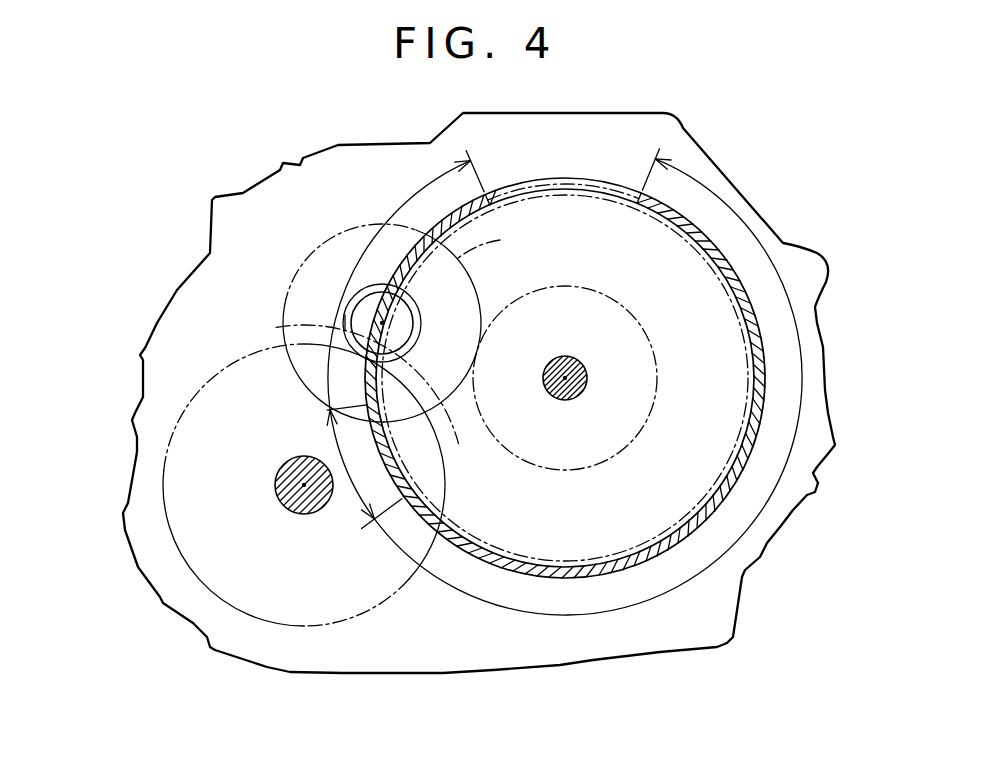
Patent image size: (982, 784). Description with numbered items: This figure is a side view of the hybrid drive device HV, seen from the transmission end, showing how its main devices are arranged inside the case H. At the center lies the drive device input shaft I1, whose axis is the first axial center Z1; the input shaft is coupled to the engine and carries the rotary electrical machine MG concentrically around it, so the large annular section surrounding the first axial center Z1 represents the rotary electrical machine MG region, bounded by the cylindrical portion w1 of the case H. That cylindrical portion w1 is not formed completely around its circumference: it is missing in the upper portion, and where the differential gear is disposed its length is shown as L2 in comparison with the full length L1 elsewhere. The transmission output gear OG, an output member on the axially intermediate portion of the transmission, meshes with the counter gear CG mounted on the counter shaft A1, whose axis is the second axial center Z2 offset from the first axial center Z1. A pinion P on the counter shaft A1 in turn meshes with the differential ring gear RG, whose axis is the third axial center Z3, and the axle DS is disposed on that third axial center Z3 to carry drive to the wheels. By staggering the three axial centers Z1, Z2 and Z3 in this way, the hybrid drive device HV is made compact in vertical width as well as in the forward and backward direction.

The case H is at (780, 527).
The hybrid drive device HV is at (178, 292).
The reference length of the cylindrical portion L1 is at (405, 205).
The shortened length at the differential gear disposing portion L2 is at (358, 497).
The rotary electrical machine MG is at (565, 417).
The cylindrical portion w1 is at (632, 570).
The transmission output gear OG is at (553, 472).
The first axial center Z1 is at (572, 372).
The drive device input shaft I1 is at (566, 357).
The counter gear CG is at (500, 240).
The second axial center Z2 is at (365, 336).
The counter shaft A1 is at (363, 282).
The pinion P is at (343, 323).
The third axial center Z3 is at (336, 450).
The axle DS is at (277, 500).
The differential ring gear RG is at (370, 612).